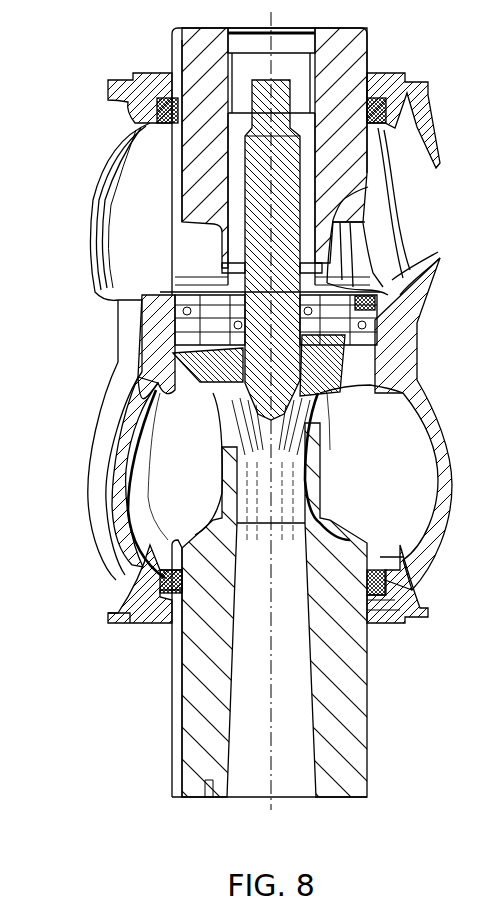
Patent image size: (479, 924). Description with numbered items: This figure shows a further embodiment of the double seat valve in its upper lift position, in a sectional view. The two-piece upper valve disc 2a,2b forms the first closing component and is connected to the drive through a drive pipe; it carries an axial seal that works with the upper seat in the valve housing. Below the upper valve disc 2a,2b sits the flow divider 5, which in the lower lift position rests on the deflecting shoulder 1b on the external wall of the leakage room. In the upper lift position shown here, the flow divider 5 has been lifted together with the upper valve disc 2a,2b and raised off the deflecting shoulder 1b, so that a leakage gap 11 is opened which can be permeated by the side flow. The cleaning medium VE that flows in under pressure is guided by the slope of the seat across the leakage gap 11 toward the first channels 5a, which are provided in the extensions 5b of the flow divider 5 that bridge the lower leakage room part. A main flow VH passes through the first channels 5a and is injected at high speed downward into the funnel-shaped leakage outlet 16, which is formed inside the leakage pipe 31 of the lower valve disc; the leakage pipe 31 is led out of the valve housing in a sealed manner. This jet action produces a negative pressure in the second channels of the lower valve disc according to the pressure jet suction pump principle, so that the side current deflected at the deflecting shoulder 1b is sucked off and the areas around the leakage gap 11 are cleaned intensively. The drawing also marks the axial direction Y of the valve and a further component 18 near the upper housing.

The rotor blade element 18 is at (340, 217).
The main flow VH is at (327, 275).
The axial direction Y is at (422, 222).
The cleaning medium VE is at (394, 291).
The upper valve disc 2a,2b is at (135, 306).
The deflecting shoulder 1b is at (173, 332).
The leakage gap 11 is at (385, 330).
The flow divider 5 is at (380, 338).
The extensions 5b is at (320, 388).
The first channels 5a is at (280, 420).
The leakage outlet 16 is at (228, 398).
The leakage pipe 31 is at (350, 710).